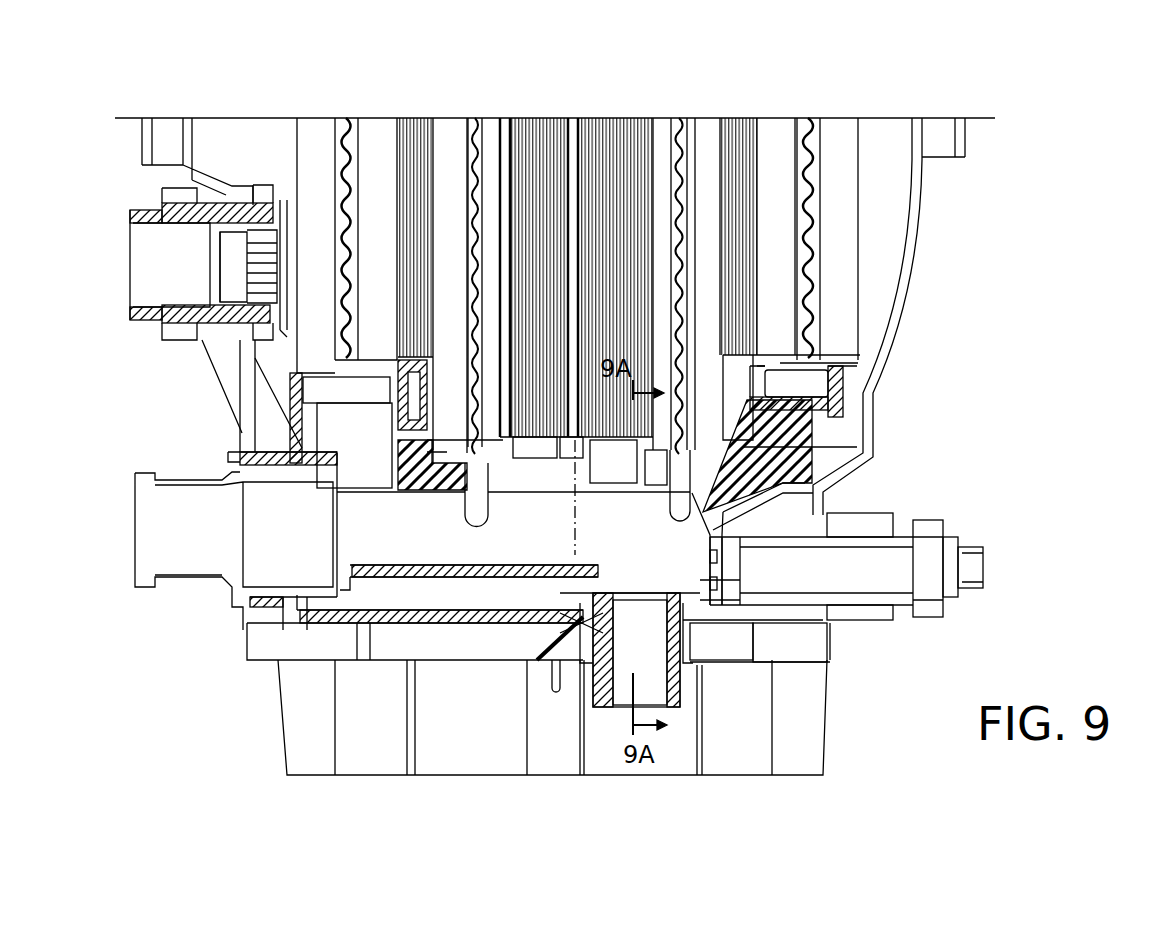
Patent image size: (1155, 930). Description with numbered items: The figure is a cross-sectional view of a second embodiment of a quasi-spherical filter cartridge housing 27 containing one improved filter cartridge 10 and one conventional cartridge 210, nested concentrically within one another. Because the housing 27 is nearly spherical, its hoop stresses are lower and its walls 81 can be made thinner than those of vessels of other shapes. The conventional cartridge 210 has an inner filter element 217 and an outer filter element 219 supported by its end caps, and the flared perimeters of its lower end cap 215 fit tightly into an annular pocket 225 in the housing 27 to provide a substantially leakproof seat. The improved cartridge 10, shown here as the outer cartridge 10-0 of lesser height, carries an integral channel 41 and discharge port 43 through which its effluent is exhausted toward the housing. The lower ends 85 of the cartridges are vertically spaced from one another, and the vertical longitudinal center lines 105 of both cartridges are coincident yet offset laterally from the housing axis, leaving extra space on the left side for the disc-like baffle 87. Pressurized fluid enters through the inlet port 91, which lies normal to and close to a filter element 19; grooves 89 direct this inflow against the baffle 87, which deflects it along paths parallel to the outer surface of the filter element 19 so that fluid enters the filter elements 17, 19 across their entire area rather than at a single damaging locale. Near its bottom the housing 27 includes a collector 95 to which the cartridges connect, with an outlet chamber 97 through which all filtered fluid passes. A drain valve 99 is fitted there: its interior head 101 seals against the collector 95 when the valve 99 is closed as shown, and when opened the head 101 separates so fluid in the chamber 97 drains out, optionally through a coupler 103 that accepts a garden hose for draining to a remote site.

The filter element 19 is at (318, 118).
The filter element 17 is at (390, 118).
The outer filter element 219 is at (447, 118).
The inner filter element 217 is at (490, 118).
The cartridge 210 is at (695, 118).
The filter cartridge 10 is at (815, 118).
The outer cartridge 10-0 is at (860, 253).
The walls 81 is at (923, 188).
The housing 27 is at (900, 294).
The channel 41 is at (843, 378).
The lower end cap 215 is at (860, 445).
The valve 99 is at (897, 512).
The coupler 103 is at (965, 547).
The annular pocket 225 is at (698, 513).
The vertical longitudinal center lines 105 is at (575, 545).
The lower ends 85 is at (293, 365).
The discharge port 43 is at (297, 393).
The baffle 87 is at (283, 200).
The inlet port 91 is at (133, 218).
The grooves 89 is at (210, 253).
The outlet chamber 97 is at (463, 573).
The collector 95 is at (370, 577).
The interior head 101 is at (740, 623).